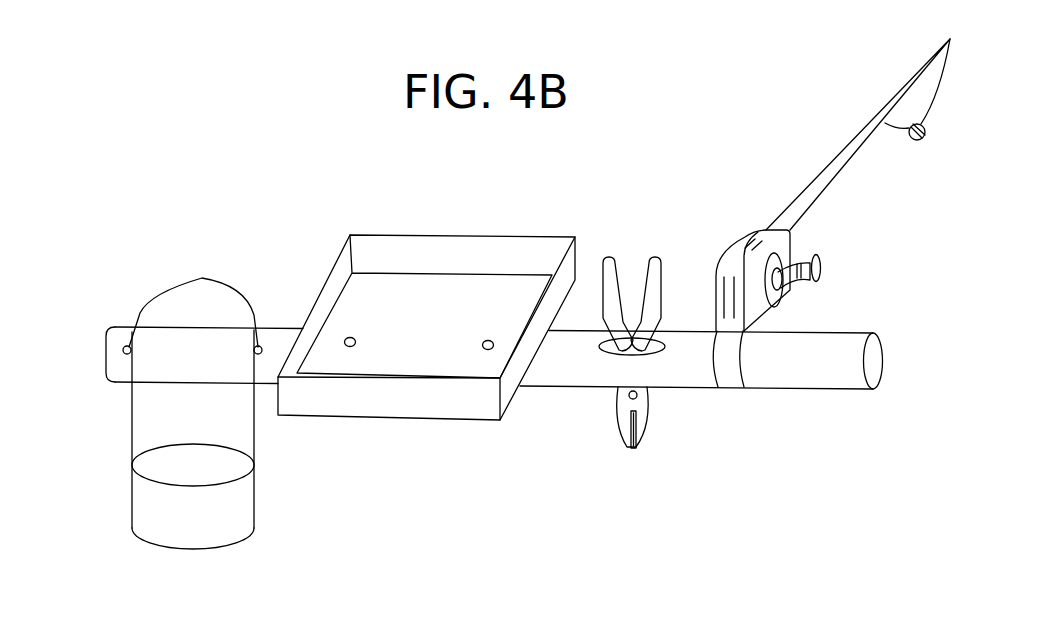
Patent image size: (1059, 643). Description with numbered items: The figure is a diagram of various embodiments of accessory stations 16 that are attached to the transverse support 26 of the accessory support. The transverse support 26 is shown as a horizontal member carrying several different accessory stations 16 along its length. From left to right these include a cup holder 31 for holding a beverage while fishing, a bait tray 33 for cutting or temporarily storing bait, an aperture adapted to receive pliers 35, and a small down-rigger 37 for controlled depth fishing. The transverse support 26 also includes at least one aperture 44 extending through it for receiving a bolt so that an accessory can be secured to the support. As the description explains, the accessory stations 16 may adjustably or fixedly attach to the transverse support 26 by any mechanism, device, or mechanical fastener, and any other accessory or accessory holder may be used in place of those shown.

The accessory station 16 is at (737, 393).
The transverse support 26 is at (125, 330).
The cup holder 31 is at (141, 540).
The bait tray 33 is at (383, 233).
The pliers 35 is at (646, 436).
The small down-rigger 37 is at (746, 228).
The aperture 44 is at (202, 278).